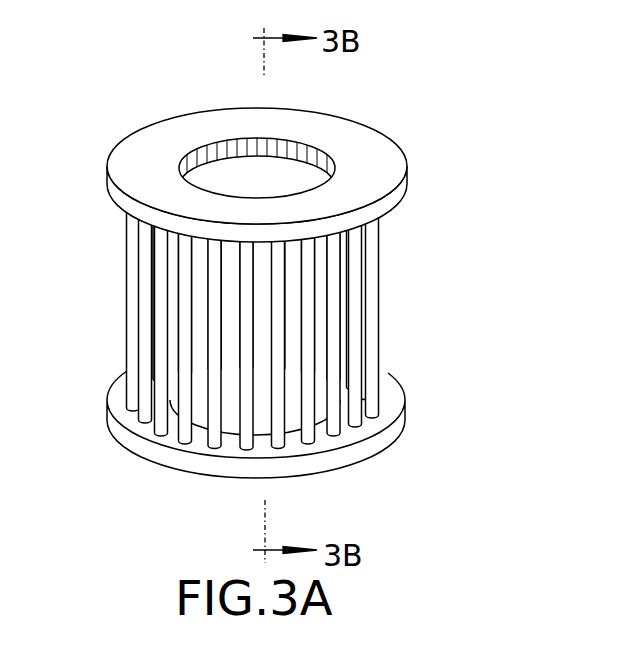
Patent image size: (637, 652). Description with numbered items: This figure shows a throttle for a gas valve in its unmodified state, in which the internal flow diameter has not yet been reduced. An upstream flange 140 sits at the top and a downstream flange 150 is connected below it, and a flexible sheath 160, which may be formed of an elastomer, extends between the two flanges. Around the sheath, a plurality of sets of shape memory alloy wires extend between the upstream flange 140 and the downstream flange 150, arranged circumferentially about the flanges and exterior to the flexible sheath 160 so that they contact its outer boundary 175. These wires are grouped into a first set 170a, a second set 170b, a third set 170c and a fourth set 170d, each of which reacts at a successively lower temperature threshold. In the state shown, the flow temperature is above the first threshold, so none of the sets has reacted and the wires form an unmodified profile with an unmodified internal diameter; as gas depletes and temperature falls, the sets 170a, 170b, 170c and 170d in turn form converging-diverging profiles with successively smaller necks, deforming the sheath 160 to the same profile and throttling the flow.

The upstream flange 140 is at (395, 144).
The downstream flange 150 is at (390, 447).
The flexible sheath 160 is at (233, 152).
The first set of SMA wires 170a is at (240, 345).
The second set of SMA wires 170b is at (318, 415).
The third set of SMA wires 170c is at (247, 310).
The fourth set of SMA wires 170d is at (277, 283).
The outer boundary 175 is at (343, 448).